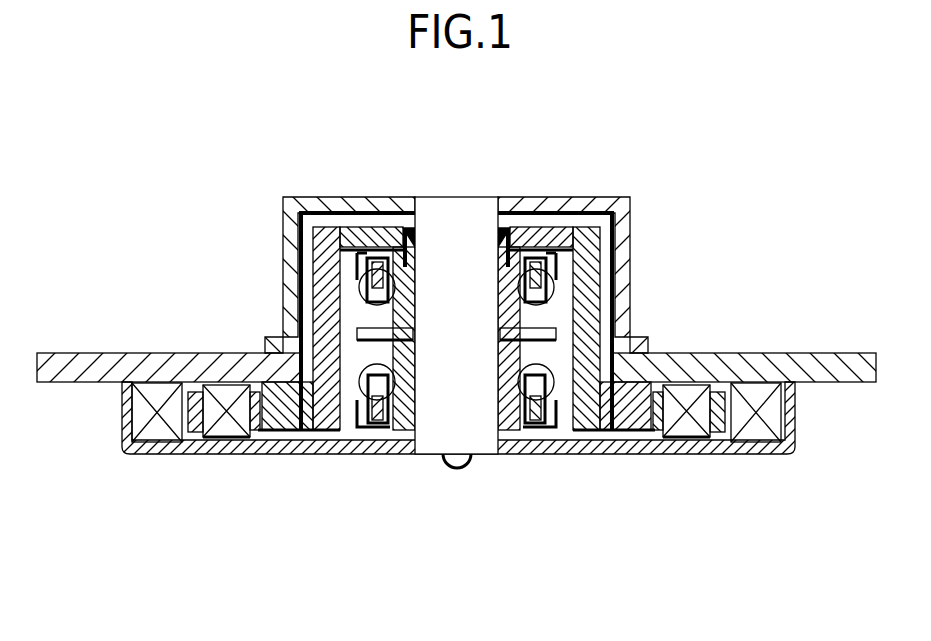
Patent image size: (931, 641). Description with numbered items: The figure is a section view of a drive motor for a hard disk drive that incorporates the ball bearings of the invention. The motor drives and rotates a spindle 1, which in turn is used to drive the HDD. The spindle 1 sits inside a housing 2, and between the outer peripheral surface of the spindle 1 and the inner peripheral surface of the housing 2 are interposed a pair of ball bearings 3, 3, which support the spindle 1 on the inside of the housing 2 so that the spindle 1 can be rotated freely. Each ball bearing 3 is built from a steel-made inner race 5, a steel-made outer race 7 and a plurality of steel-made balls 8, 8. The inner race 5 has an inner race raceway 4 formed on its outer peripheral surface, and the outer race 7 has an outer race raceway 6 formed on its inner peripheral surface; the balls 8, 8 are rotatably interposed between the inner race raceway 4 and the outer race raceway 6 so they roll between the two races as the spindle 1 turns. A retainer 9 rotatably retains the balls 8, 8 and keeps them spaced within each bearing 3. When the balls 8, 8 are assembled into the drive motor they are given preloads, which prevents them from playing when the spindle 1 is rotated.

The spindle 1 is at (460, 205).
The housing 2 is at (593, 252).
The ball bearing 3 is at (568, 228).
The inner race raceway 4 is at (390, 232).
The inner race 5 is at (425, 255).
The outer race raceway 6 is at (309, 212).
The outer race 7 is at (345, 283).
The ball 8 is at (365, 298).
The retainer 9 is at (540, 240).